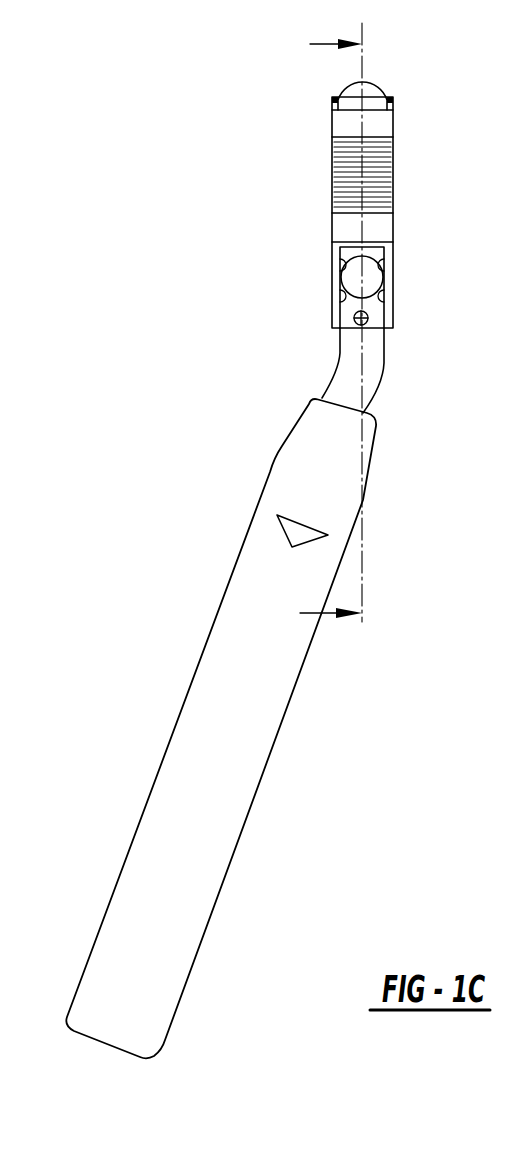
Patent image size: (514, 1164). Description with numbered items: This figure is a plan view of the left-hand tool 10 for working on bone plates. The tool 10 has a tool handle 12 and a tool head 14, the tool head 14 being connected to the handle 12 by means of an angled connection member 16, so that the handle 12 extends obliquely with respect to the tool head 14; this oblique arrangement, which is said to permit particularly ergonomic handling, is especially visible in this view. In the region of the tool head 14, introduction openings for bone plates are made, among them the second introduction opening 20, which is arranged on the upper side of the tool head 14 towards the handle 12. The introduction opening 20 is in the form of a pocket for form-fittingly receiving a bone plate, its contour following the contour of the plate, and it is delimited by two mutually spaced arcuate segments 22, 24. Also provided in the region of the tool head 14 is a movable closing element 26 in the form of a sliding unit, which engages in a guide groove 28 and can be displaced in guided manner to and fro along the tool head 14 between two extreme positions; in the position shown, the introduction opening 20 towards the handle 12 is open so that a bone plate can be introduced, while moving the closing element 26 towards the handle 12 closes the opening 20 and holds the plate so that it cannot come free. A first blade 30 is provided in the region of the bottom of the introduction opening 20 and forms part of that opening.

The left-hand tool 10 is at (267, 540).
The tool handle 12 is at (198, 702).
The tool head 14 is at (332, 126).
The angled connection member 16 is at (370, 360).
The second introduction opening 20 is at (372, 285).
The arcuate segment 22 is at (393, 246).
The arcuate segment 24 is at (348, 303).
The closing element 26 is at (395, 160).
The guide groove 28 is at (395, 98).
The first blade 30 is at (395, 265).